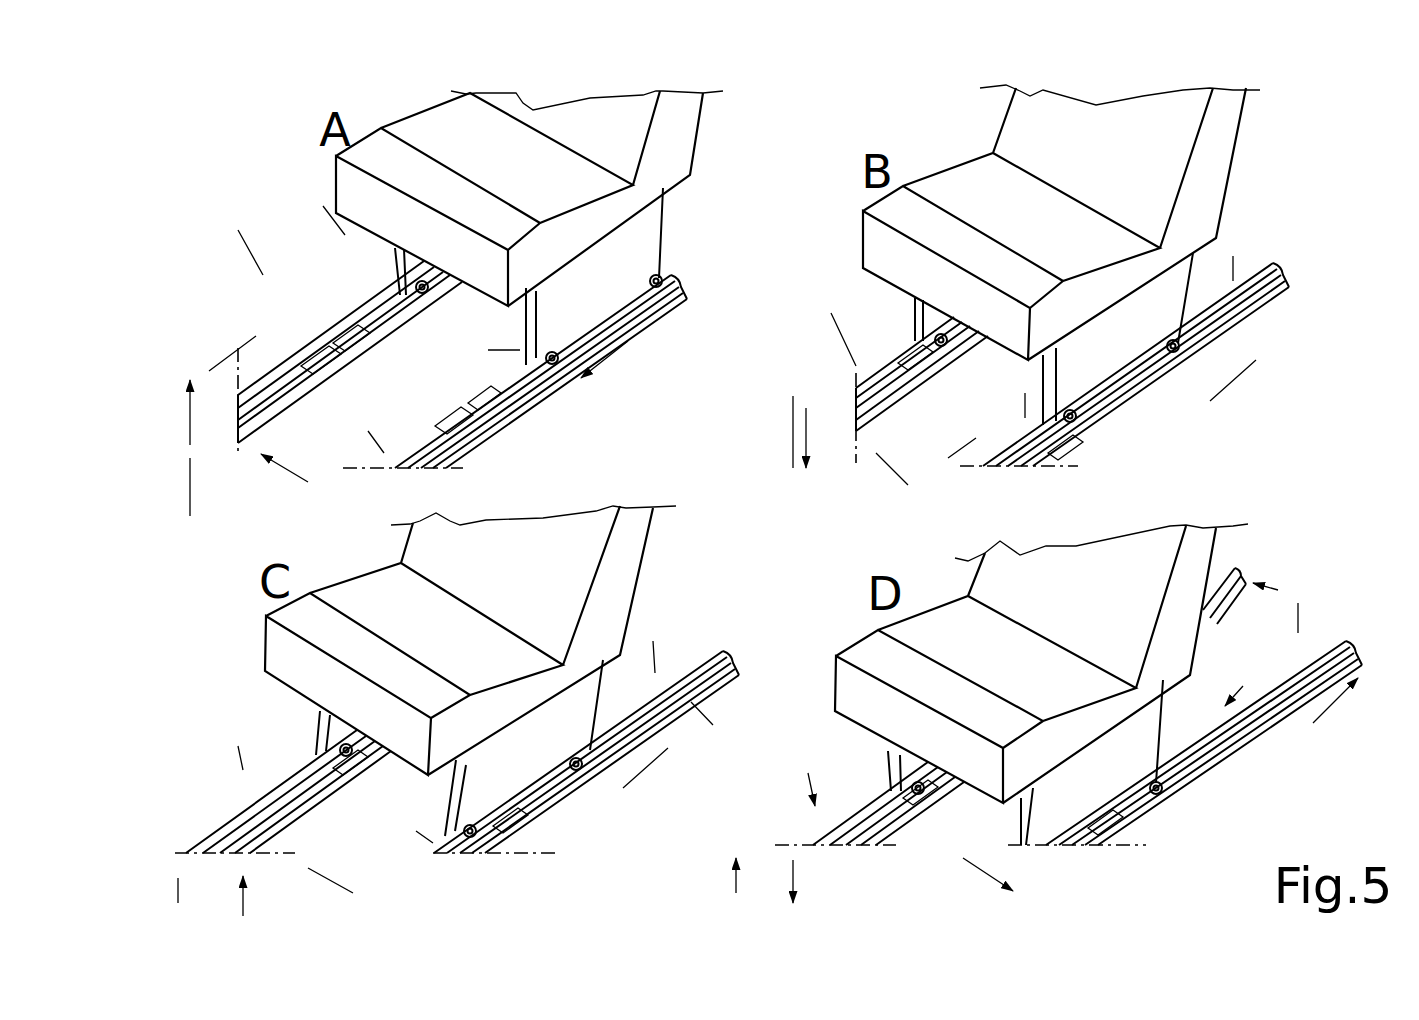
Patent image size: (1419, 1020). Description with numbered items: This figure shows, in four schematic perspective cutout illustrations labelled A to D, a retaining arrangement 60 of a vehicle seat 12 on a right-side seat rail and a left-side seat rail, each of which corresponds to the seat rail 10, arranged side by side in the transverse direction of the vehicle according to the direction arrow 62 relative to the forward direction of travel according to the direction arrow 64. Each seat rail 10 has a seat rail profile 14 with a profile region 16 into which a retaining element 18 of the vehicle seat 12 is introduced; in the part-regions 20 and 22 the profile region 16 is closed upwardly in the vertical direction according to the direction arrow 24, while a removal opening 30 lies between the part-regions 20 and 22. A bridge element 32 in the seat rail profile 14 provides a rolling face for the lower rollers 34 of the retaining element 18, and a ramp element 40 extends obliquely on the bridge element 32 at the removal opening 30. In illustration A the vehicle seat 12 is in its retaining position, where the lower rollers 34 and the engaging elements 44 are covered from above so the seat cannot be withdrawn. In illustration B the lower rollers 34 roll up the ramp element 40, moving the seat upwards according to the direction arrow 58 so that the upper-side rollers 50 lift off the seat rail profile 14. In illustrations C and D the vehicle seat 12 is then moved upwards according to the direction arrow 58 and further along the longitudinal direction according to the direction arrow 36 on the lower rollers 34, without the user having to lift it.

The seat rail 10 is at (322, 347).
The vehicle seat 12 is at (707, 160).
The seat rail profile 14 is at (384, 340).
The profile region 16 is at (292, 246).
The retaining element 18 is at (388, 293).
The part-region 20 is at (788, 886).
The part-region 22 is at (803, 428).
The direction arrow 24 is at (185, 428).
The removal opening 30 is at (330, 318).
The bridge element 32 is at (287, 395).
The lower rollers 34 is at (958, 358).
The direction arrow 36 is at (600, 360).
The ramp element 40 is at (322, 373).
The engaging elements 44 is at (940, 378).
The upper-side rollers 50 is at (428, 300).
The direction arrow 58 is at (185, 495).
The retaining arrangement 60 is at (618, 450).
The direction arrow 62 is at (275, 475).
The direction arrow 64 is at (985, 440).